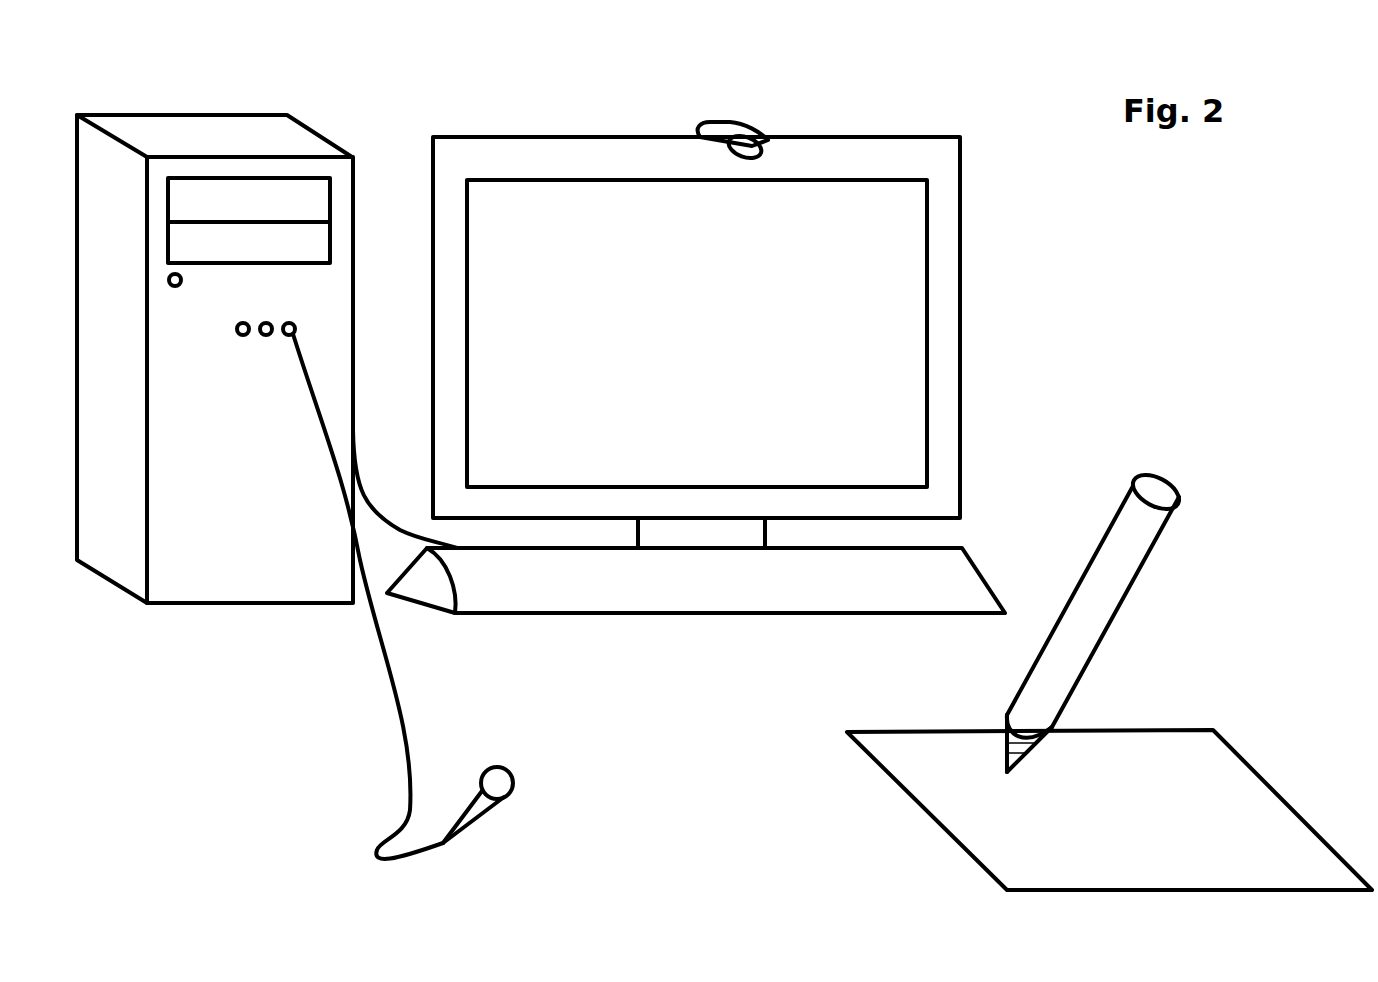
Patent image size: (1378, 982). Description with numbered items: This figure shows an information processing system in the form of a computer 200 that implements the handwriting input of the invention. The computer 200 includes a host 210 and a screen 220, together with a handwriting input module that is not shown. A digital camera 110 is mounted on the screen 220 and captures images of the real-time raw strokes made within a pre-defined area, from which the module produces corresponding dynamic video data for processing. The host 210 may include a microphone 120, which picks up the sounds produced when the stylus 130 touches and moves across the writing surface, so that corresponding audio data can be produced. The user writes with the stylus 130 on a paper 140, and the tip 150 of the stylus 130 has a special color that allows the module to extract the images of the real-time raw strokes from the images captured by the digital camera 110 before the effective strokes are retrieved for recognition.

The computer 200 is at (572, 66).
The host 210 is at (193, 634).
The screen 220 is at (986, 333).
The digital camera 110 is at (778, 125).
The microphone 120 is at (420, 603).
The stylus 130 is at (1167, 569).
The paper 140 is at (1226, 724).
The tip 150 is at (989, 765).